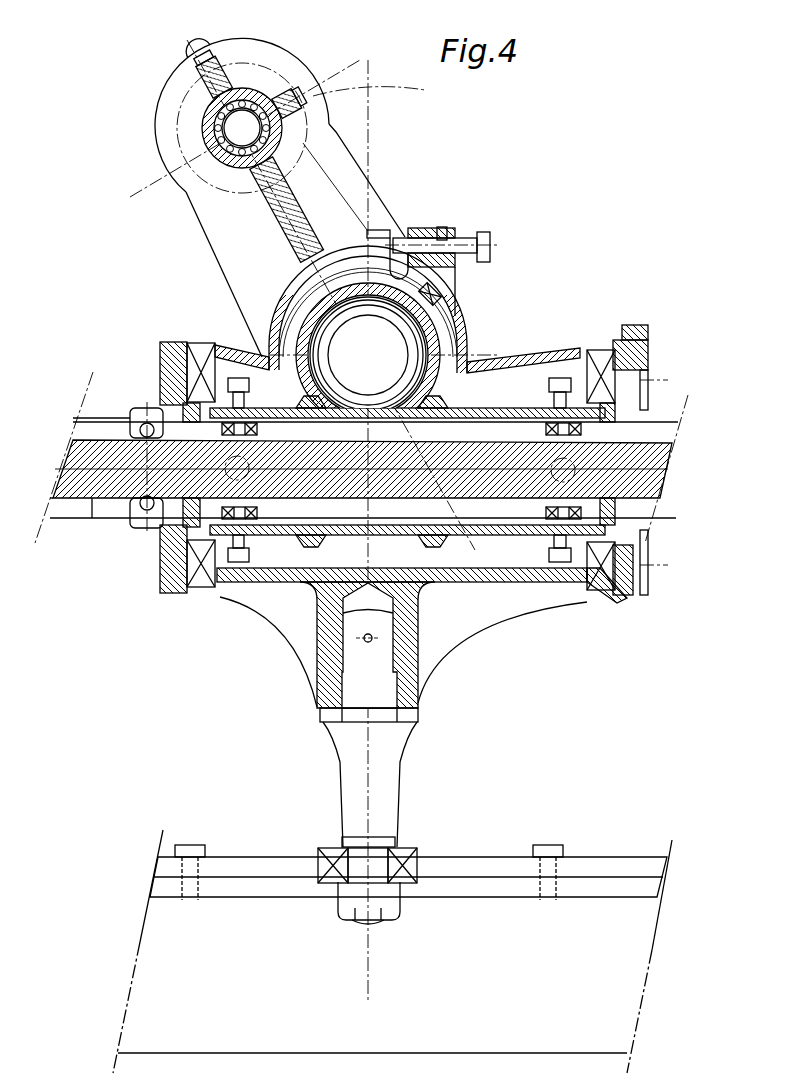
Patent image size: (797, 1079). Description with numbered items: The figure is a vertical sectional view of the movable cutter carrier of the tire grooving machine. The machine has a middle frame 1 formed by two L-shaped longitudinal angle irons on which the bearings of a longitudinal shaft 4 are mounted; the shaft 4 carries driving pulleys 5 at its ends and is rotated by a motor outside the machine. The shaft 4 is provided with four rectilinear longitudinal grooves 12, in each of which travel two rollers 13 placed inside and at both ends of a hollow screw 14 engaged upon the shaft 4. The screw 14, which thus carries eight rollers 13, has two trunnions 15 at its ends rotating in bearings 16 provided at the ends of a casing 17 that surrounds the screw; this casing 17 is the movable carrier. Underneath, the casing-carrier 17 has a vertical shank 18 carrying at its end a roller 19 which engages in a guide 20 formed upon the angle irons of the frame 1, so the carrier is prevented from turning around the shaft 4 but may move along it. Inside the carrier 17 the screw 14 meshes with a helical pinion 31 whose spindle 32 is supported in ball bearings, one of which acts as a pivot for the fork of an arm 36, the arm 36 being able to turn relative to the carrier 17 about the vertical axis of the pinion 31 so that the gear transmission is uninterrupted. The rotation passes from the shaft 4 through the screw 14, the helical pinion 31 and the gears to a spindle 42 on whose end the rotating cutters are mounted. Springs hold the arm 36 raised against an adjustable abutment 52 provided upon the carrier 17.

The middle frame 1 is at (392, 951).
The longitudinal shaft 4 is at (97, 492).
The driving pulleys 5 is at (205, 27).
The rectilinear longitudinal grooves 12 is at (108, 516).
The rollers 13 is at (546, 428).
The hollow screw 14 is at (448, 408).
The trunnions 15 is at (172, 378).
The bearings 16 is at (200, 358).
The casing 17 is at (290, 352).
The vertical shank 18 is at (343, 752).
The roller 19 is at (323, 858).
The guide 20 is at (253, 867).
The helical pinion 31 is at (314, 376).
The spindle 32 is at (368, 355).
The arm 36 is at (342, 147).
The spindle 42 is at (245, 120).
The adjustable abutment 52 is at (395, 242).